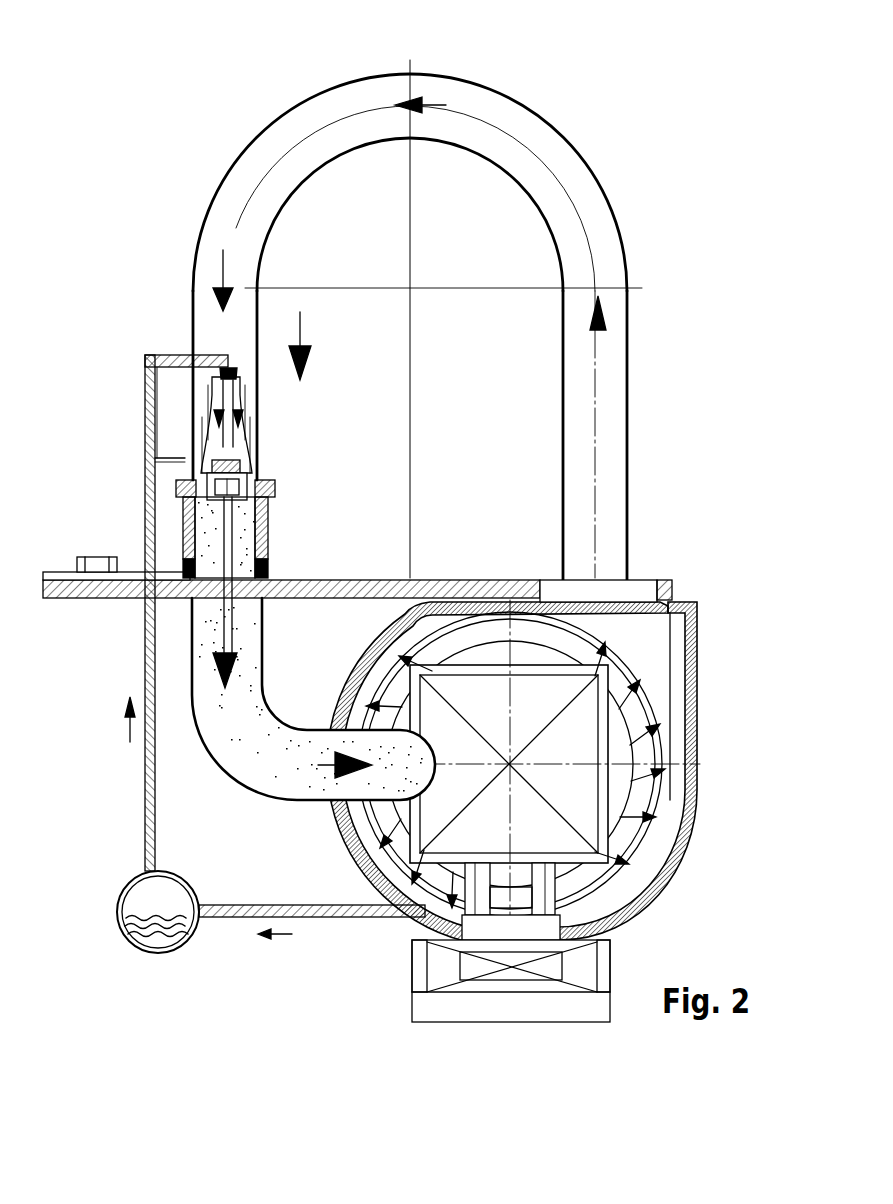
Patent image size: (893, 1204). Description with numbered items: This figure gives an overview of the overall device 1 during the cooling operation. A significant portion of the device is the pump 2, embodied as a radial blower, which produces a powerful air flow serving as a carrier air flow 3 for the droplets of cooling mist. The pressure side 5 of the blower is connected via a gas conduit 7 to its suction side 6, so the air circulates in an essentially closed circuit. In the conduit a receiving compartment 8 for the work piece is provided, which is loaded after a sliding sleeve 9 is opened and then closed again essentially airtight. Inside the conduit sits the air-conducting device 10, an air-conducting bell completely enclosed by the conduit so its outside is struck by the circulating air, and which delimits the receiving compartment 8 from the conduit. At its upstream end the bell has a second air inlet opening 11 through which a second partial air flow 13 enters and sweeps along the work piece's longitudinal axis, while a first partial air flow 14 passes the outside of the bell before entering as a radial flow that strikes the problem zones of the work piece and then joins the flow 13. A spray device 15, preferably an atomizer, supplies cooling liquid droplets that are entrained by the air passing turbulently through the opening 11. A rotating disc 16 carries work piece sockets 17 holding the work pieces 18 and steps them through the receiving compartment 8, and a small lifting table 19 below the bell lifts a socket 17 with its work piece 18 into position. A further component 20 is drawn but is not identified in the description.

The overall device 1 is at (632, 177).
The pump 2 is at (662, 760).
The carrier air flow 3 is at (427, 103).
The pressure side 5 is at (622, 572).
The suction side 6 is at (388, 778).
The gas conduit 7 is at (258, 135).
The receiving compartment 8 is at (245, 557).
The sliding sleeve 9 is at (264, 520).
The air-conducting device 10 is at (200, 410).
The second air inlet opening 11 is at (248, 392).
The second partial air flow 13 is at (232, 376).
The first partial air flow 14 is at (202, 418).
The spray device 15 is at (148, 505).
The rotating disc 16 is at (107, 583).
The work piece sockets 17 is at (98, 560).
The work pieces 18 is at (260, 463).
The lifting table 19 is at (227, 513).
The liquid collector 20 is at (150, 925).